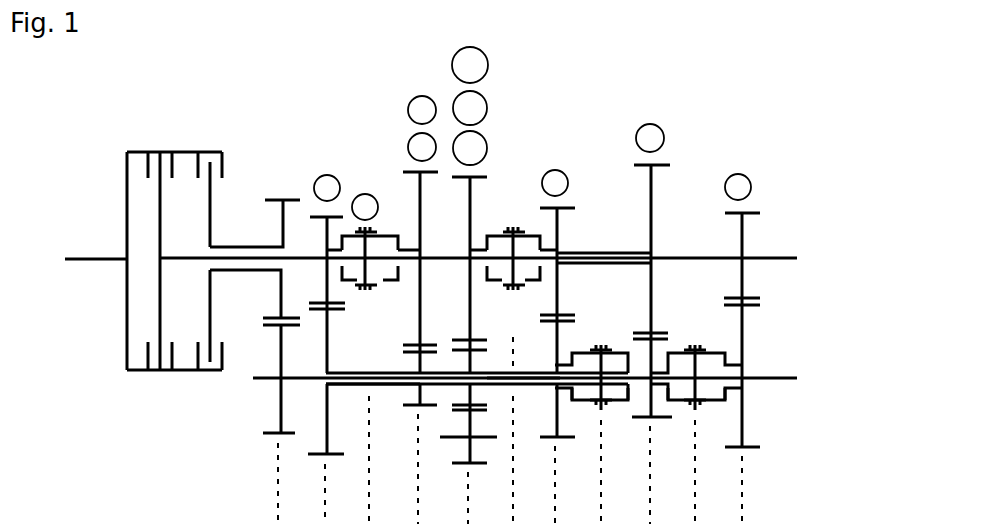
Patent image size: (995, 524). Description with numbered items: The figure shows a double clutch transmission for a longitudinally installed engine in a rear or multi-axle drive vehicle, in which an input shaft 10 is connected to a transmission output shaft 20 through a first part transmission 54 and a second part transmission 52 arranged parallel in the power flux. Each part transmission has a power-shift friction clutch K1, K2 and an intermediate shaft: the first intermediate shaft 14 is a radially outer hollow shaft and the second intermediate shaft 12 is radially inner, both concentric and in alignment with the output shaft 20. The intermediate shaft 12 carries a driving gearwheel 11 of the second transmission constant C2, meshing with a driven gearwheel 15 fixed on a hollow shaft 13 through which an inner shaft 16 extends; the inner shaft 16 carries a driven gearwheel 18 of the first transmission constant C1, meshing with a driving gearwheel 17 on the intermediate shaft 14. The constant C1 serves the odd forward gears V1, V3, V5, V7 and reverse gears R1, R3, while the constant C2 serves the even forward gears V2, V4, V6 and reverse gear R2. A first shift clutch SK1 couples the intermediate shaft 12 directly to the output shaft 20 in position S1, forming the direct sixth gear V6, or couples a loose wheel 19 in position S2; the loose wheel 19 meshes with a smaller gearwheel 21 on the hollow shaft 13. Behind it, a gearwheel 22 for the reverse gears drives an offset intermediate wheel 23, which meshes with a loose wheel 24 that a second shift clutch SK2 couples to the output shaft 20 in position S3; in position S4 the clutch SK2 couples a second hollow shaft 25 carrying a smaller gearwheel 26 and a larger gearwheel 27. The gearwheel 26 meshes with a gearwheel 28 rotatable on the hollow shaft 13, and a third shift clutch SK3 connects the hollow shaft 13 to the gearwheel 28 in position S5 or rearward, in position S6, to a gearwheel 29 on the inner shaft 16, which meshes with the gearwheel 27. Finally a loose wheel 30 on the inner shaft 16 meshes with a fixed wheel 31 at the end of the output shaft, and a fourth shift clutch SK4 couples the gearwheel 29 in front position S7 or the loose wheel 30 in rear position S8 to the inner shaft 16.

The input shaft 10 is at (72, 263).
The driving gearwheel of the second transmission constant 11 is at (327, 282).
The second intermediate shaft 12 is at (298, 252).
The hollow shaft of the second part transmission 13 is at (373, 389).
The first intermediate shaft 14 is at (233, 246).
The driven gearwheel of the second transmission constant 15 is at (330, 345).
The inner shaft 16 is at (300, 376).
The driving gearwheel of the first transmission constant 17 is at (281, 292).
The driven gearwheel of the first transmission constant 18 is at (280, 405).
The loose wheel 19 is at (422, 228).
The transmission output shaft 20 is at (790, 253).
The smaller gearwheel 21 is at (418, 362).
The gearwheel of the fourth gearwheel plane 22 is at (478, 362).
The intermediate wheel 23 is at (472, 455).
The loose wheel 24 is at (468, 312).
The second hollow shaft 25 is at (592, 250).
The gearwheel 26 is at (559, 228).
The gearwheel 27 is at (650, 200).
The gearwheel 28 is at (554, 336).
The gearwheel 29 is at (635, 350).
The loose wheel 30 is at (750, 340).
The fixed wheel 31 is at (744, 232).
The second part transmission 52 is at (511, 397).
The first part transmission 54 is at (303, 393).
The power-shift friction clutch K1 is at (212, 243).
The power-shift friction clutch K2 is at (174, 247).
The first transmission constant C1 is at (257, 329).
The second transmission constant C2 is at (342, 320).
The first shift clutch SK1 is at (373, 375).
The second shift clutch SK2 is at (513, 375).
The third shift clutch SK3 is at (591, 424).
The fourth shift clutch SK4 is at (696, 424).
The shift position S1 is at (347, 283).
The shift position S2 is at (393, 283).
The shift position S3 is at (492, 283).
The shift position S4 is at (535, 283).
The shift position S5 is at (575, 406).
The shift position S6 is at (620, 406).
The shift position S7 is at (676, 406).
The shift position S8 is at (724, 406).
The first forward gear V1 is at (422, 147).
The second forward gear V2 is at (422, 110).
The third forward gear V3 is at (650, 138).
The fourth forward gear V4 is at (555, 183).
The fifth forward gear V5 is at (738, 187).
The sixth forward gear V6 is at (365, 207).
The seventh forward gear V7 is at (327, 188).
The first reverse gear R1 is at (470, 148).
The second reverse gear R2 is at (470, 108).
The third reverse gear R3 is at (470, 65).